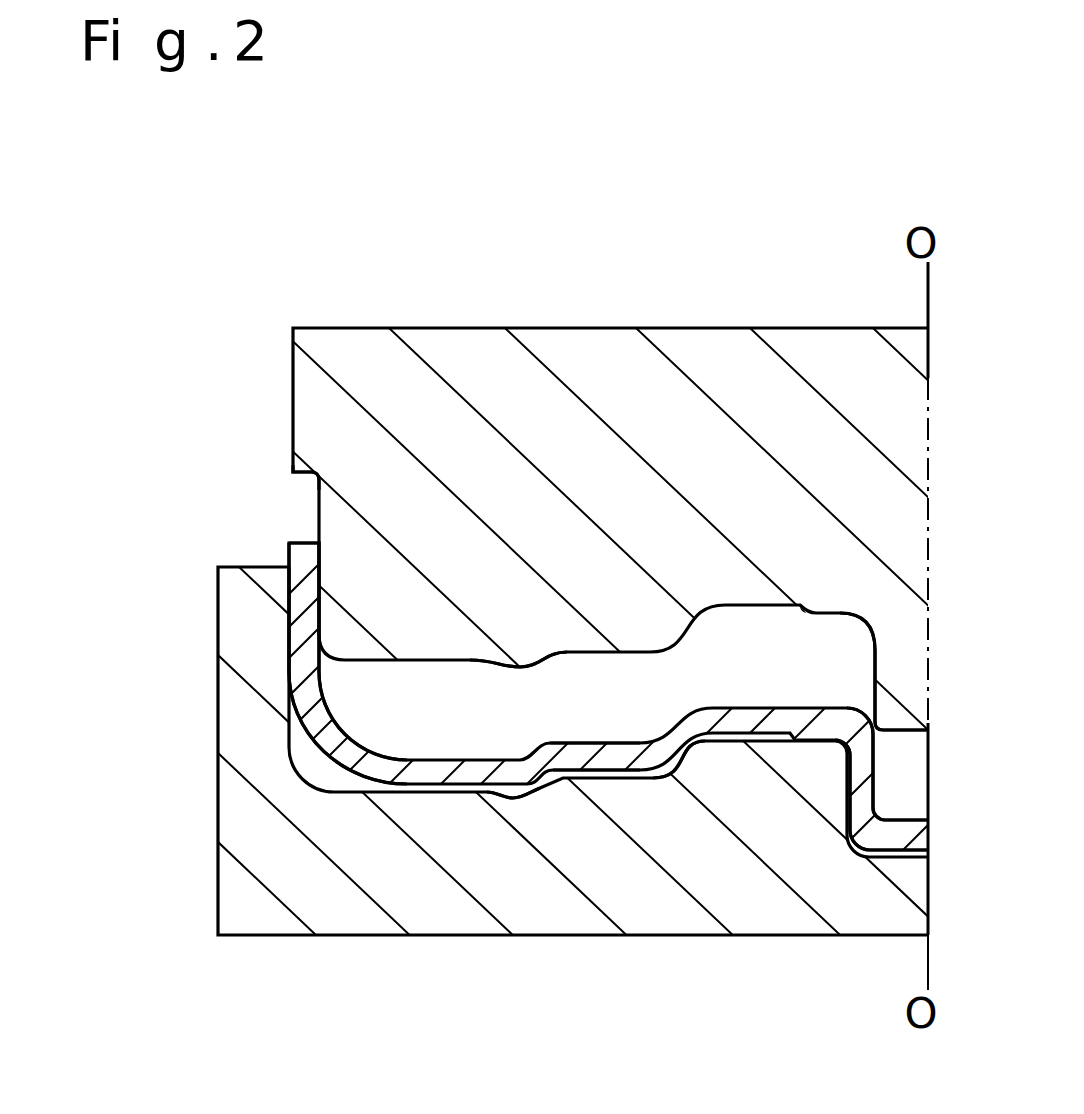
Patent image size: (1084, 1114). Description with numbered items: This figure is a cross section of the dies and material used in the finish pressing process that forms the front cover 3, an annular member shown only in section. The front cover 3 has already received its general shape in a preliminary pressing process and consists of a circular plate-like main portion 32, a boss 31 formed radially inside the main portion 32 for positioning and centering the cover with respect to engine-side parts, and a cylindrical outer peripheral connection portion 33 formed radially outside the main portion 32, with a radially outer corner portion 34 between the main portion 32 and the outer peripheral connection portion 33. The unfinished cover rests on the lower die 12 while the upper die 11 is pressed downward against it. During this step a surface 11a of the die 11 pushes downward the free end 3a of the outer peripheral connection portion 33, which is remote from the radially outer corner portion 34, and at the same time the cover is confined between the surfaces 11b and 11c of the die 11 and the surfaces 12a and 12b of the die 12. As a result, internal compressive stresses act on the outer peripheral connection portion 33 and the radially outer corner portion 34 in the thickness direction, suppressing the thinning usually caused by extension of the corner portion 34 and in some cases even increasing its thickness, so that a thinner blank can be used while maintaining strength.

The die 11 is at (292, 377).
The surface of die 11a is at (297, 477).
The surface of die 11b is at (533, 668).
The surface of die 11c is at (872, 655).
The die 12 is at (233, 722).
The surface of die 12a is at (513, 797).
The surface of die 12b is at (697, 763).
The front cover 3 is at (441, 755).
The free end 3a is at (300, 541).
The boss 31 is at (852, 830).
The main portion 32 is at (620, 758).
The outer peripheral connection portion 33 is at (300, 628).
The radially outer corner portion 34 is at (347, 747).